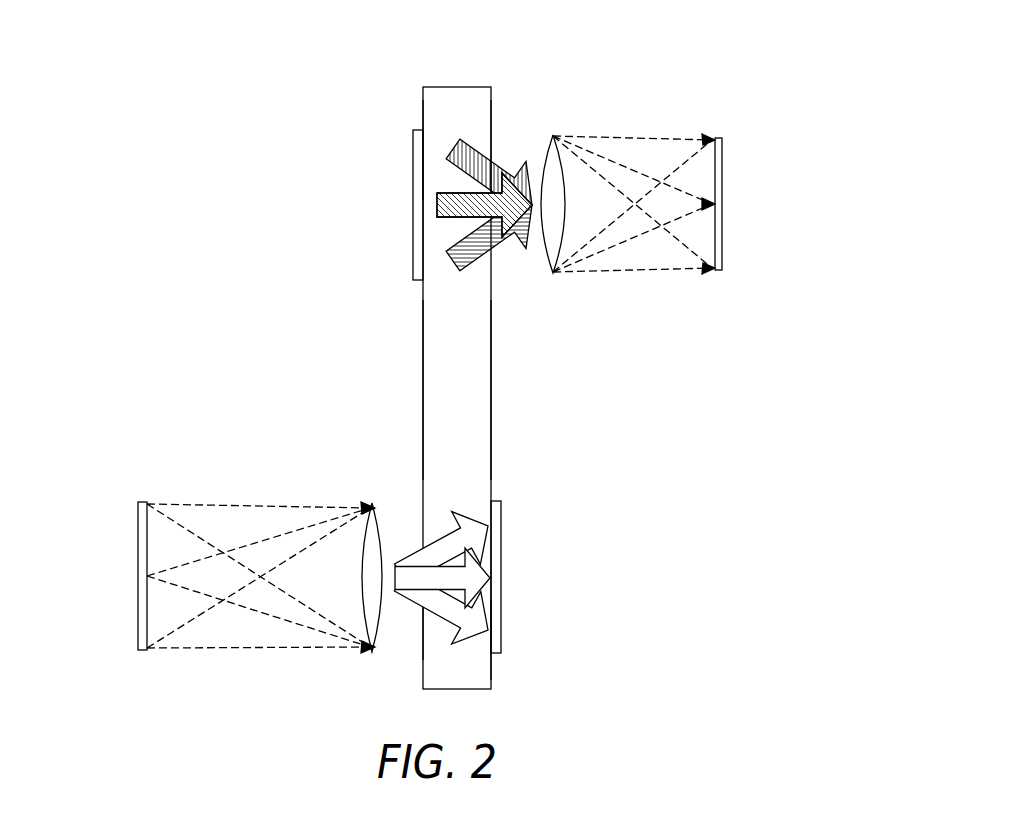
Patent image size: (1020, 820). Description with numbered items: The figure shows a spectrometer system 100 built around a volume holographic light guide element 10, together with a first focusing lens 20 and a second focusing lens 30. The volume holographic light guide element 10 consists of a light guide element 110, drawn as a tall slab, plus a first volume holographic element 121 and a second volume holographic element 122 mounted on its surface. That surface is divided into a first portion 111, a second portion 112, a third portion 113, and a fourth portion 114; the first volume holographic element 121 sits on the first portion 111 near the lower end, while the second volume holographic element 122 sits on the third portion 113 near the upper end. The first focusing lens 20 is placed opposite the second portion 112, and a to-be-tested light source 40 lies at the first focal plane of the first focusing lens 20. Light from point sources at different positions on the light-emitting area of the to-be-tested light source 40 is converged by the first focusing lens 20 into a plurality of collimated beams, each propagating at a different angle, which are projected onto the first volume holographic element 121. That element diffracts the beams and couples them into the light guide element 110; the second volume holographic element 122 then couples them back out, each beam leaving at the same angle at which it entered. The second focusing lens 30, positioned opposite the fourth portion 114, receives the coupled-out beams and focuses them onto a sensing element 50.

The spectrometer system 100 is at (826, 32).
The volume holographic light guide element 10 is at (514, 405).
The light guide element 110 is at (433, 380).
The first portion 111 is at (490, 640).
The second portion 112 is at (422, 613).
The third portion 113 is at (424, 138).
The fourth portion 114 is at (492, 152).
The first volume holographic element 121 is at (501, 536).
The second volume holographic element 122 is at (413, 168).
The first focusing lens 20 is at (377, 518).
The second focusing lens 30 is at (550, 272).
The to-be-tested light source 40 is at (138, 548).
The sensing element 50 is at (722, 172).